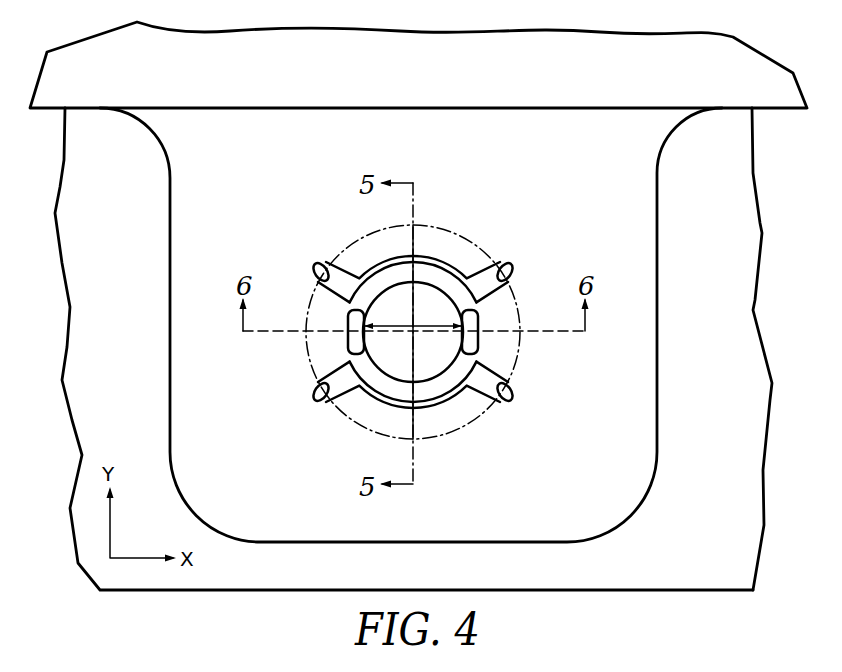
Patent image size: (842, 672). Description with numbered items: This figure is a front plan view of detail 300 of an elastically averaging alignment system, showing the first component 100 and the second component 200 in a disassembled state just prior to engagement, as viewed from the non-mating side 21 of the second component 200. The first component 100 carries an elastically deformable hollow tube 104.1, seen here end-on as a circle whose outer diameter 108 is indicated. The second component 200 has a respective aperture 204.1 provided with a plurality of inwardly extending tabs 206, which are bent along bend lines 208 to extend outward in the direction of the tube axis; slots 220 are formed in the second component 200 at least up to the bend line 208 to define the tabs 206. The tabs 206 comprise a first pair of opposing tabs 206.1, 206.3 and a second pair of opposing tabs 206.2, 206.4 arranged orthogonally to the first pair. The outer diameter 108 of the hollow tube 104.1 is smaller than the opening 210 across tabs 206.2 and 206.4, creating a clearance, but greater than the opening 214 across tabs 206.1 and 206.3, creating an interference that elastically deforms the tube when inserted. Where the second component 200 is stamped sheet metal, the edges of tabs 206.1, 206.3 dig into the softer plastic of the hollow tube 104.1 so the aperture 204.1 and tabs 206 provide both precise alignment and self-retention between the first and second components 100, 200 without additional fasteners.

The detail 300 is at (602, 112).
The non-mating side of the second alignment member 21 is at (239, 143).
The second component 200 is at (623, 178).
The first component 100 is at (721, 200).
The hollow tube 104.1 is at (462, 258).
The outer diameter 108 is at (437, 259).
The aperture 204.1 is at (456, 398).
The inwardly extending tabs 206 is at (436, 418).
The first opposing tab 206.1 is at (352, 348).
The second opposing tab 206.2 is at (380, 258).
The first opposing tab 206.3 is at (478, 347).
The second opposing tab 206.4 is at (443, 404).
The bend line 208 is at (386, 399).
The opening across tabs 210 is at (346, 318).
The opening across tabs 214 is at (481, 318).
The slots 220 is at (314, 268).